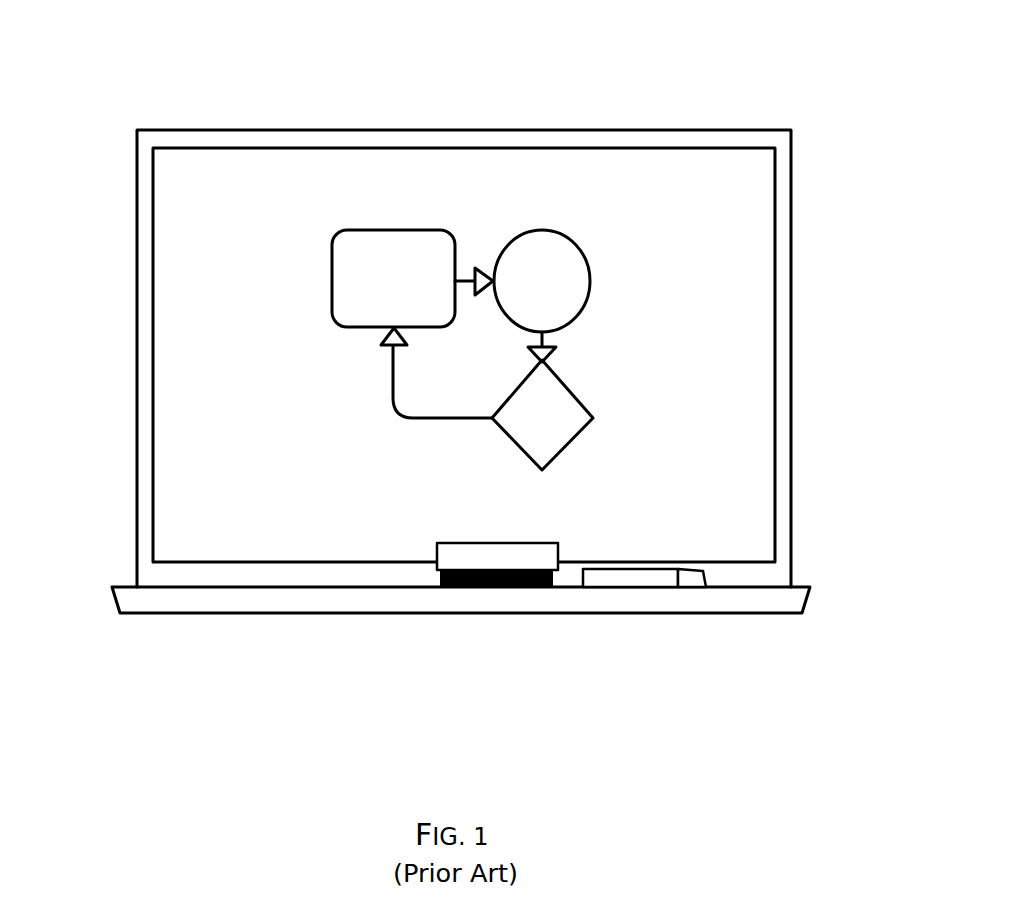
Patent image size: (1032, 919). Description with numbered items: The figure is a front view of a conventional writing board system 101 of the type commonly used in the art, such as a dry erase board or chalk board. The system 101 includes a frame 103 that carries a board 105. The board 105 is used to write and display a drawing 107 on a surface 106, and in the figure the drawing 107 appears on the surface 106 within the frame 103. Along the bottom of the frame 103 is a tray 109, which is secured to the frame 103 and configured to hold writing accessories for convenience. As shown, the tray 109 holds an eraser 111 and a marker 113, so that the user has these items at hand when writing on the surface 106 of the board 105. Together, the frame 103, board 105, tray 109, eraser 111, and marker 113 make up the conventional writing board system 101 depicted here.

The writing board system 101 is at (134, 58).
The frame 103 is at (595, 130).
The board 105 is at (777, 352).
The surface 106 is at (190, 418).
The drawing 107 is at (620, 250).
The tray 109 is at (227, 613).
The eraser 111 is at (475, 587).
The marker 113 is at (712, 582).